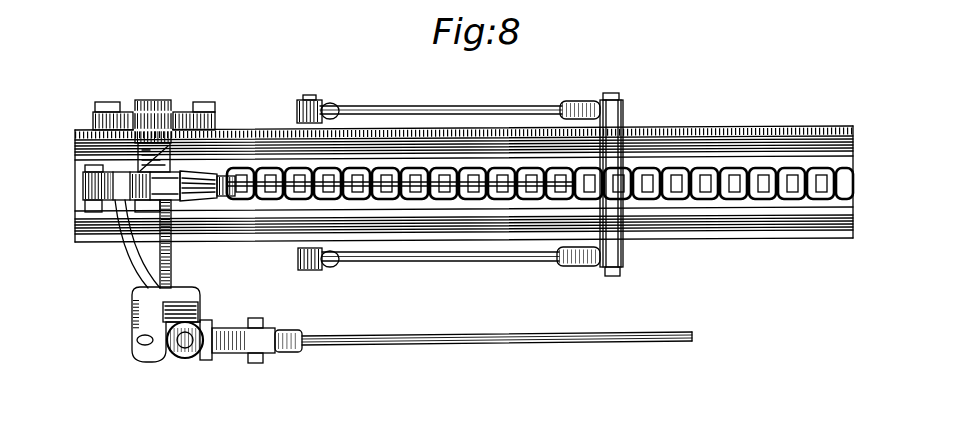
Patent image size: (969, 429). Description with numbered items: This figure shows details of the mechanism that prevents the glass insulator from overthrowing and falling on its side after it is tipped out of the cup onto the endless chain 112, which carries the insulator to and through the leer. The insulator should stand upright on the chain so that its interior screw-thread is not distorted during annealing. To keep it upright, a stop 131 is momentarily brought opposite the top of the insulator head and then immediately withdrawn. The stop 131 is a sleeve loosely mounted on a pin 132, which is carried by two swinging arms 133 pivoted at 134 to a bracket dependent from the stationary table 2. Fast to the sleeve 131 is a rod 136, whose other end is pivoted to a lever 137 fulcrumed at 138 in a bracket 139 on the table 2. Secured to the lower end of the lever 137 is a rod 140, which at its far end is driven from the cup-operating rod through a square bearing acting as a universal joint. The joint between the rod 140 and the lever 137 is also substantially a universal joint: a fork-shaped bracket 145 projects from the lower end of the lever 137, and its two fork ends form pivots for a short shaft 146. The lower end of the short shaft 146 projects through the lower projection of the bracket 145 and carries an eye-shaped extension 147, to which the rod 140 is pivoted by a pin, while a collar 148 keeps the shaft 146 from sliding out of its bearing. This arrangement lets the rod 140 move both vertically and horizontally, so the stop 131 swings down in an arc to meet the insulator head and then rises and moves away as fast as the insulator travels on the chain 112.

The stationary table 2 is at (752, 239).
The endless chain 112 is at (765, 168).
The stop 131 is at (606, 135).
The pin 132 is at (608, 96).
The swinging arms 133 is at (520, 103).
The pivot 134 is at (310, 97).
The rod 136 is at (540, 134).
The lever 137 is at (123, 192).
The fulcrum 138 is at (171, 132).
The bracket 139 is at (126, 120).
The rod 140 is at (572, 344).
The fork-shaped bracket 145 is at (194, 297).
The short shaft 146 is at (175, 353).
The eye-shaped extension 147 is at (223, 355).
The collar 148 is at (208, 326).